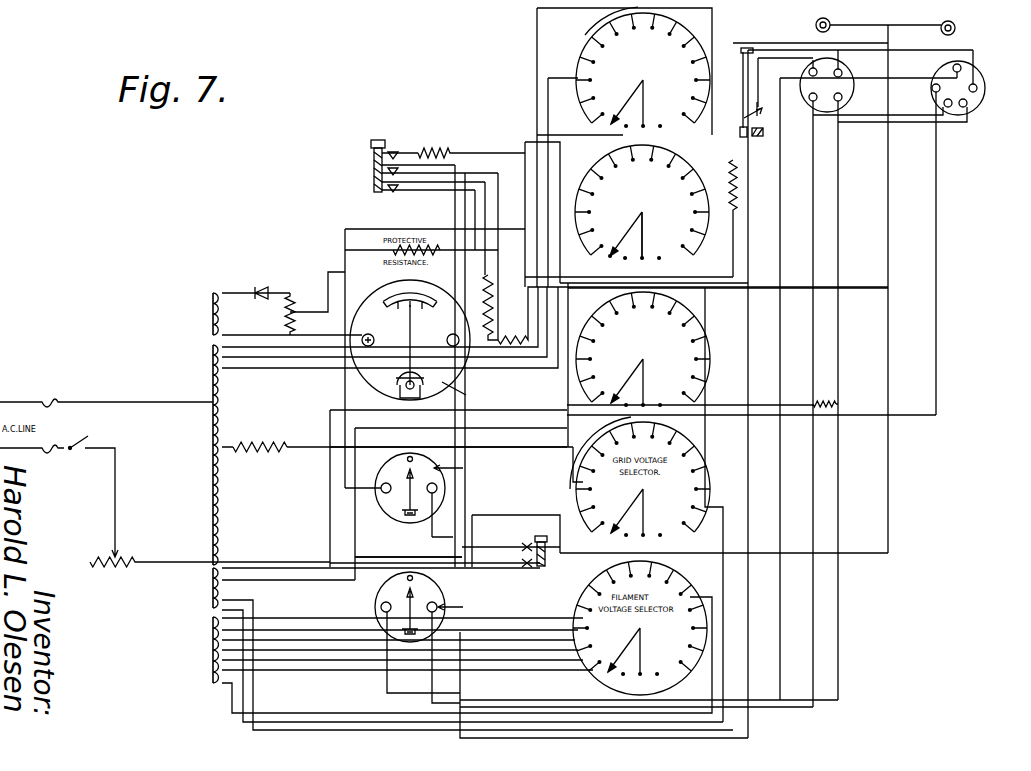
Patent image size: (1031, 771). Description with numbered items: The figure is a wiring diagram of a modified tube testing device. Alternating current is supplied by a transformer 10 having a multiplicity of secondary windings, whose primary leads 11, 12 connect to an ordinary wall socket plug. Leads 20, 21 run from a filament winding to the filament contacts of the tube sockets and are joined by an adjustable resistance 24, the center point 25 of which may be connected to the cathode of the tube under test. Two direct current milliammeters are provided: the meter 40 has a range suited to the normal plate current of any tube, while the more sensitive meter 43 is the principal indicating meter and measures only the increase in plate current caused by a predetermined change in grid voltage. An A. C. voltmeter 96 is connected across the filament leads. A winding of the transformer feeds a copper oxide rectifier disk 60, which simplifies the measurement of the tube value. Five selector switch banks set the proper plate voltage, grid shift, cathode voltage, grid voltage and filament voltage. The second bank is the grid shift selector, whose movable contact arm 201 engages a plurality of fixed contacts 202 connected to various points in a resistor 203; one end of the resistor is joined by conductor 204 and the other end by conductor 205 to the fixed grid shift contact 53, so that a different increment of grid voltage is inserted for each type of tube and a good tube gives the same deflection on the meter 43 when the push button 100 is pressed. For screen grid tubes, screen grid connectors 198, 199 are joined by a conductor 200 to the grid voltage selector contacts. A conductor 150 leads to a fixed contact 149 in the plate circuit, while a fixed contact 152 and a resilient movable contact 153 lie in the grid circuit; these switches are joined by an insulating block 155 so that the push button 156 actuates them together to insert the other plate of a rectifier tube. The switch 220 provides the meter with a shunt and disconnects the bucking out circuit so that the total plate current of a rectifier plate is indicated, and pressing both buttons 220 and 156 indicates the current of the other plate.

The transformer 10 is at (213, 470).
The primary lead 11 is at (112, 402).
The primary lead 12 is at (117, 500).
The lead 20 is at (813, 233).
The lead 21 is at (838, 227).
The adjustable resistance 24 is at (830, 393).
The center point 25 is at (837, 405).
The meter 40 is at (392, 476).
The meter 43 is at (374, 299).
The fixed contact 53 is at (543, 568).
The copper oxide rectifier disk 60 is at (253, 293).
The A. C. voltmeter 96 is at (374, 602).
The push button 100 is at (540, 515).
The fixed contact 149 is at (750, 115).
The conductor 150 is at (742, 70).
The fixed contact 152 is at (762, 130).
The movable contact 153 is at (762, 110).
The insulating block 155 is at (738, 163).
The push button 156 is at (740, 134).
The screen grid connector 198 is at (829, 21).
The screen grid connector 199 is at (955, 25).
The conductor 200 is at (888, 232).
The movable contact arm 201 is at (629, 245).
The fixed contacts 202 is at (602, 255).
The resistor 203 is at (578, 191).
The conductor 204 is at (566, 394).
The conductor 205 is at (744, 342).
The switch 220 is at (378, 140).